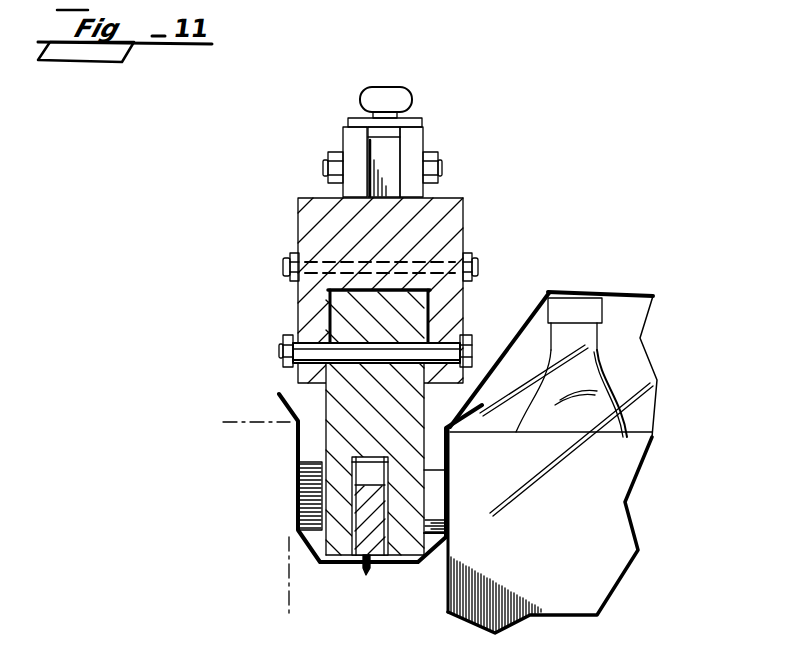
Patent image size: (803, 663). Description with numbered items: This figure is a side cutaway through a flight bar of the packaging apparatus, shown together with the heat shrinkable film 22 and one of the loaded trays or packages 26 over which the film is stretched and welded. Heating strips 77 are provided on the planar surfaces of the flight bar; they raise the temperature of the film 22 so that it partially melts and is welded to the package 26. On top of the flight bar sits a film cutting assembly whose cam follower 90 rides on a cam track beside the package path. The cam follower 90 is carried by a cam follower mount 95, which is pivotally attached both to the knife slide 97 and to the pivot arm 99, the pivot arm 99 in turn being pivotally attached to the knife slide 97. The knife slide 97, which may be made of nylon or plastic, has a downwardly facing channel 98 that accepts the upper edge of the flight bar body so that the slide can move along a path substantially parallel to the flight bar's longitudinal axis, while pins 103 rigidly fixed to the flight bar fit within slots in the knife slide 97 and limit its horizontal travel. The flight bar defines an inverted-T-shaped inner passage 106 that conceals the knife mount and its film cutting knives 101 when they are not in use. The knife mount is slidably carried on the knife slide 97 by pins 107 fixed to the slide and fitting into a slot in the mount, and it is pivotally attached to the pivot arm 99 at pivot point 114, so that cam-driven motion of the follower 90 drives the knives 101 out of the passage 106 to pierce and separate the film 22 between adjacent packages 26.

The film 22 is at (320, 568).
The packages 26 is at (603, 532).
The heating strips 77 is at (307, 487).
The cam follower 90 is at (370, 88).
The cam follower mount 95 is at (423, 130).
The knife slide 97 is at (302, 302).
The downwardly facing channel 98 is at (428, 405).
The pivot arm 99 is at (427, 197).
The film cutting knives 101 is at (367, 573).
The pins 103 is at (283, 343).
The inner passage 106 is at (387, 568).
The pins 107 is at (283, 265).
The pivot point 114 is at (333, 157).